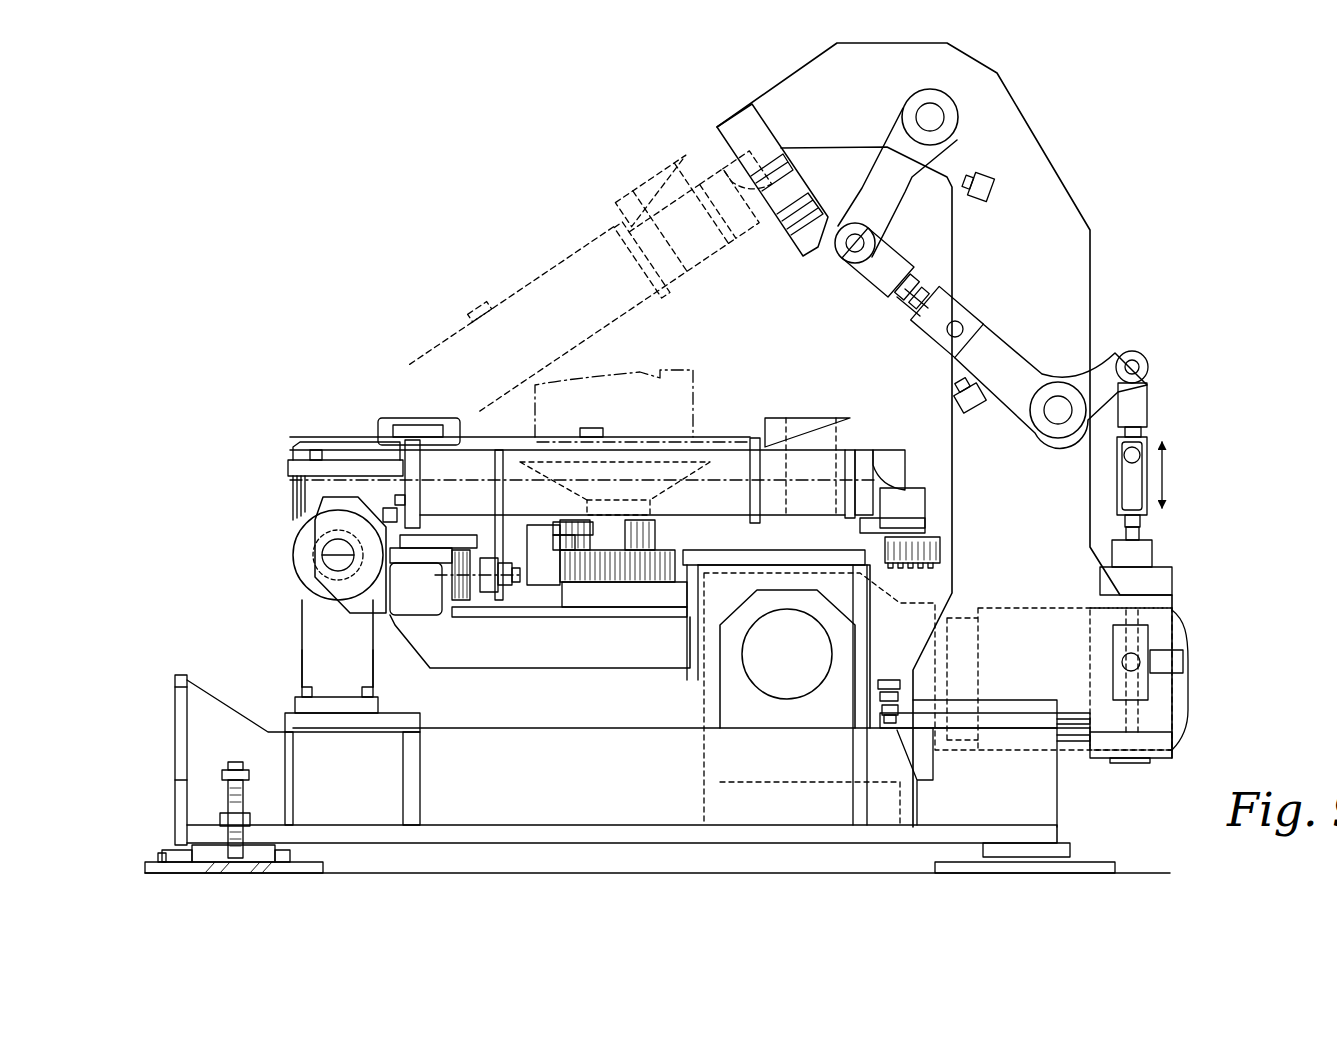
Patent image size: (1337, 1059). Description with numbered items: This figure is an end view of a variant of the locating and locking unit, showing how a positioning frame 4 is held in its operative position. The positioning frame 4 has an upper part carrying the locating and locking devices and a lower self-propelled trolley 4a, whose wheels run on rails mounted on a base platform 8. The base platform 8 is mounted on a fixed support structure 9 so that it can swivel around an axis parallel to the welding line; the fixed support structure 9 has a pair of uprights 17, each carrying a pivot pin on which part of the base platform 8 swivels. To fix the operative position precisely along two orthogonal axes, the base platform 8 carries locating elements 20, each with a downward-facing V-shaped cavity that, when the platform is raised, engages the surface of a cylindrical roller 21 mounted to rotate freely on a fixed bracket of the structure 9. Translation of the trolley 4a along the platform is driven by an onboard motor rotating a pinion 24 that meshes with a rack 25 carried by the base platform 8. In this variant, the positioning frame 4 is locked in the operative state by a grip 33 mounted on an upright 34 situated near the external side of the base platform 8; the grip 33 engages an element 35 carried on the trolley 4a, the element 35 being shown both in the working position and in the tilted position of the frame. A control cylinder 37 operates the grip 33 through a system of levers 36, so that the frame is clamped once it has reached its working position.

The positioning frame 4 is at (676, 365).
The self-propelled trolley 4a is at (508, 303).
The base platform 8 is at (587, 675).
The fixed support structure 9 is at (295, 652).
The upright 17 is at (363, 667).
The locating element 20 is at (295, 497).
The cylindrical roller 21 is at (290, 560).
The pinion 24 is at (643, 572).
The rack 25 is at (537, 572).
The grip 33 is at (702, 150).
The upright 34 is at (1060, 192).
The clamp jaw 35 is at (907, 505).
The system of levers 36 is at (1028, 350).
The control cylinder 37 is at (1160, 598).